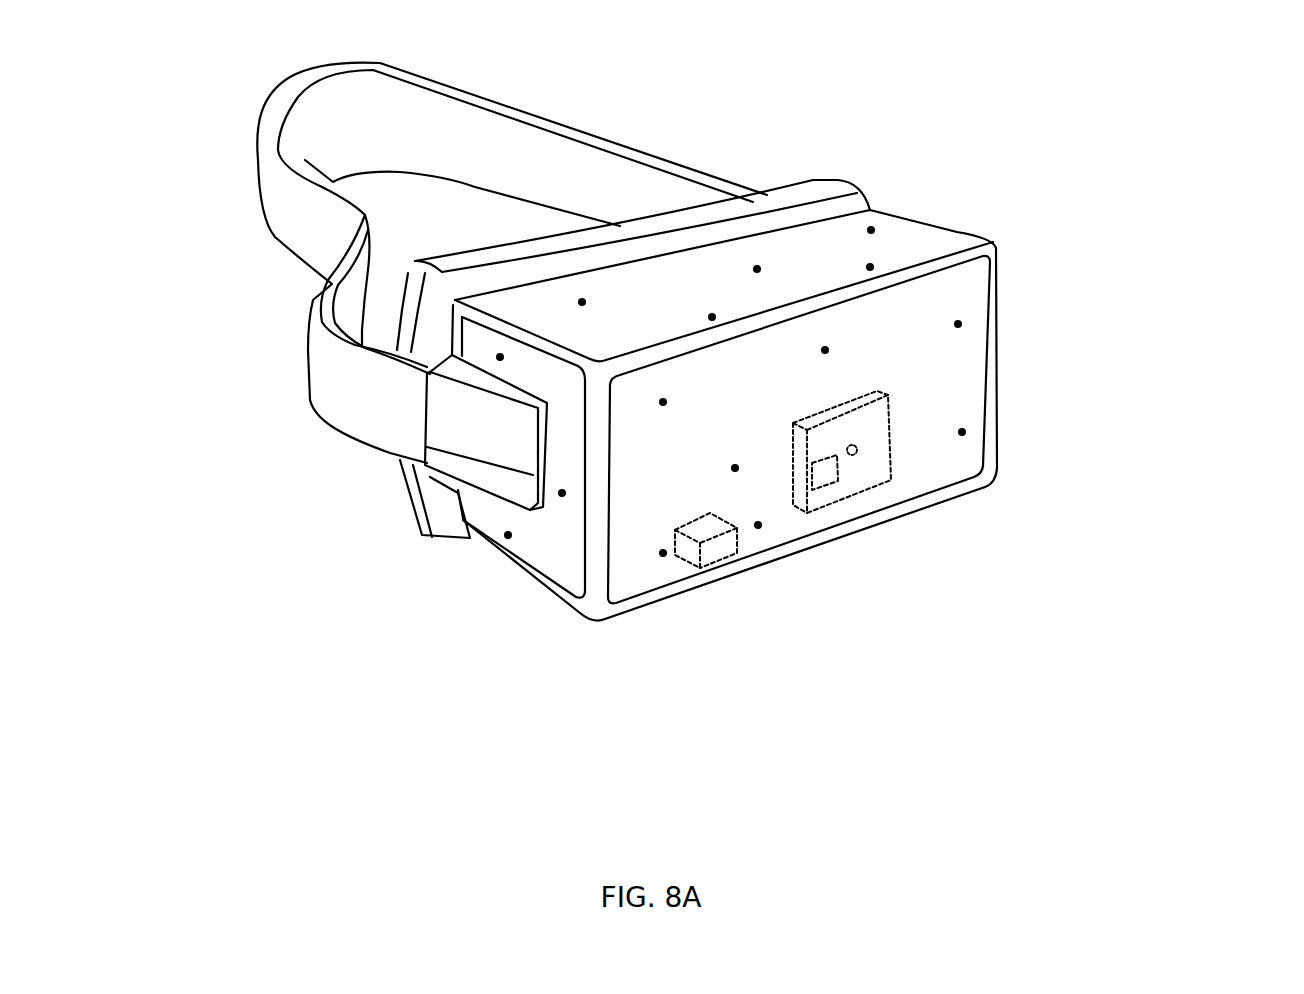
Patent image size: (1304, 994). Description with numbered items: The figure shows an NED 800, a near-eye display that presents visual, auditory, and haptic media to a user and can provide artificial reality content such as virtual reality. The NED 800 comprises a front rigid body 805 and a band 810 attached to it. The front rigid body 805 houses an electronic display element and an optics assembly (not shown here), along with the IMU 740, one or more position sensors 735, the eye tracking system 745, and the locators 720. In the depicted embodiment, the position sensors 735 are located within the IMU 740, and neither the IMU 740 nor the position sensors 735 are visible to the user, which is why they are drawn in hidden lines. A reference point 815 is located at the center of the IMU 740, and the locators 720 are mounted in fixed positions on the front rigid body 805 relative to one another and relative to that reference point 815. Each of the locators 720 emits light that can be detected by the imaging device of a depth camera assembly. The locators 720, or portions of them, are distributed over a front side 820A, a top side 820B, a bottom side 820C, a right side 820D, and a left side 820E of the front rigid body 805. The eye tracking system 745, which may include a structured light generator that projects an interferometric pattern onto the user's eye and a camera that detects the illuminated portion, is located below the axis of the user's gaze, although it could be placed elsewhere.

The NED 800 is at (330, 468).
The front rigid body 805 is at (1000, 243).
The band 810 is at (632, 140).
The reference point 815 is at (860, 468).
The front side 820A is at (646, 592).
The top side 820B is at (538, 302).
The bottom side 820C is at (498, 590).
The right side 820D is at (553, 543).
The left side 820E is at (962, 225).
The locators 720 is at (984, 420).
The position sensors 735 is at (825, 499).
The IMU 740 is at (907, 458).
The eye tracking system 745 is at (717, 571).